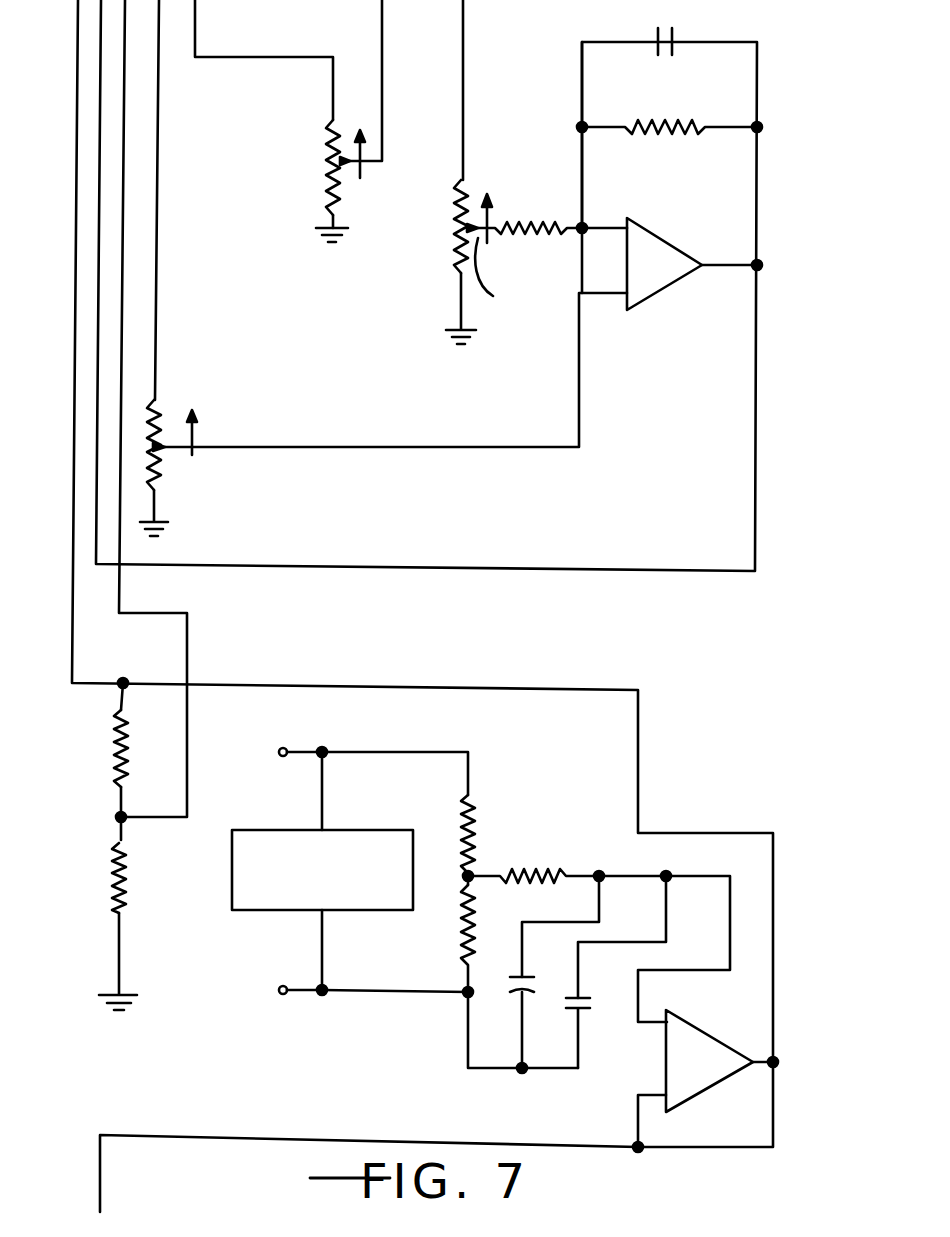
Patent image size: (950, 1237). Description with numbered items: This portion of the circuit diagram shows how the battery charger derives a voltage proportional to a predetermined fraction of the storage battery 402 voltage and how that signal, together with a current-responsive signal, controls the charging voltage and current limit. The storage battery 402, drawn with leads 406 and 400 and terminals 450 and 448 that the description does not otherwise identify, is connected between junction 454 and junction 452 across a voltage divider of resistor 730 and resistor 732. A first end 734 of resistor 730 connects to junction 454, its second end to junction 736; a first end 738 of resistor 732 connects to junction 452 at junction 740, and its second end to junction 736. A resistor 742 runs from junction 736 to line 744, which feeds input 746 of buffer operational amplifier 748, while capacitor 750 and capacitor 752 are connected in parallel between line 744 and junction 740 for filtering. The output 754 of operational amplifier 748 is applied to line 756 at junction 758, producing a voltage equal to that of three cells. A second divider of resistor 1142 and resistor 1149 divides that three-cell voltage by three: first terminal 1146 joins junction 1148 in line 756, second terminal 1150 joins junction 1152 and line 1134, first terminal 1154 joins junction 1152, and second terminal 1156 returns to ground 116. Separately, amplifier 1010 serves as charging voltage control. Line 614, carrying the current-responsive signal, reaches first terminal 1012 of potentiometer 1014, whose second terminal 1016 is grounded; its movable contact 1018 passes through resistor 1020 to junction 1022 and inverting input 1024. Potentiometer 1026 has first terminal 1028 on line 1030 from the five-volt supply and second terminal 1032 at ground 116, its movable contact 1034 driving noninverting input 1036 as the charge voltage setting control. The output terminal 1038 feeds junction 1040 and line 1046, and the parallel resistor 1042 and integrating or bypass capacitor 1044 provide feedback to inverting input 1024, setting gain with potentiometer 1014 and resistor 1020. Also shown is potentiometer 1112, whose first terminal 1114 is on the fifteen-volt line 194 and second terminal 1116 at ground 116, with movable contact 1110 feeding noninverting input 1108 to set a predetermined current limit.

The 15 volt line 194 is at (195, 30).
The first terminal 1114 is at (333, 62).
The noninverting input 1108 is at (382, 78).
The potentiometer 1112 is at (328, 128).
The movable contact 1110 is at (338, 170).
The second terminal 1116 is at (333, 222).
The ground 116 is at (318, 232).
The line 614 is at (463, 128).
The potentiometer 1014 is at (455, 194).
The first terminal 1012 is at (463, 168).
The resistor 1020 is at (536, 200).
The inverting input 1024 is at (605, 228).
The junction 1022 is at (578, 238).
The second terminal 1016 is at (457, 278).
The movable contact 1018 is at (520, 274).
The integrating or bypass capacitor 1044 is at (675, 40).
The resistor 1042 is at (662, 125).
The amplifier 1010 is at (662, 240).
The junction 1040 is at (762, 264).
The output terminal 1038 is at (712, 270).
The noninverting input 1036 is at (610, 298).
The line 1046 is at (101, 128).
The line 756 is at (78, 190).
The line 1134 is at (125, 240).
The line 1030 is at (158, 295).
The first terminal 1028 is at (155, 400).
The potentiometer 1026 is at (190, 378).
The movable contact 1034 is at (180, 440).
The second terminal 1032 is at (155, 505).
The junction 1148 is at (120, 682).
The first terminal 1146 is at (120, 698).
The resistor 1142 is at (116, 757).
The second terminal 1150 is at (120, 817).
The junction 1152 is at (124, 818).
The first terminal 1154 is at (118, 842).
The resistor 1149 is at (122, 882).
The second terminal 1156 is at (117, 962).
The terminal 450 is at (285, 750).
The junction 454 is at (325, 750).
The conductor 406 is at (325, 828).
The storage battery 402 is at (365, 828).
The conductor 400 is at (322, 915).
The terminal 448 is at (280, 990).
The junction 452 is at (322, 990).
The first end 734 is at (468, 765).
The resistor 730 is at (468, 805).
The junction 736 is at (470, 872).
The resistor 742 is at (522, 876).
The line 744 is at (625, 876).
The resistor 732 is at (470, 905).
The first end 738 is at (470, 968).
The capacitor 750 is at (526, 968).
The capacitor 752 is at (580, 1000).
The junction 740 is at (465, 995).
The input 746 is at (660, 1022).
The operational amplifier 748 is at (700, 1040).
The junction 758 is at (776, 1060).
The output 754 is at (755, 1068).